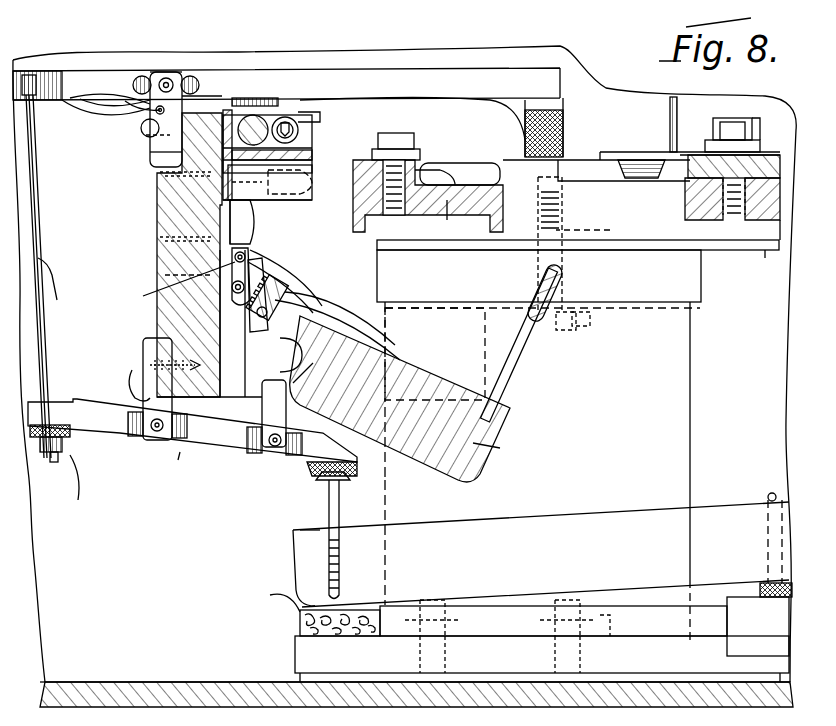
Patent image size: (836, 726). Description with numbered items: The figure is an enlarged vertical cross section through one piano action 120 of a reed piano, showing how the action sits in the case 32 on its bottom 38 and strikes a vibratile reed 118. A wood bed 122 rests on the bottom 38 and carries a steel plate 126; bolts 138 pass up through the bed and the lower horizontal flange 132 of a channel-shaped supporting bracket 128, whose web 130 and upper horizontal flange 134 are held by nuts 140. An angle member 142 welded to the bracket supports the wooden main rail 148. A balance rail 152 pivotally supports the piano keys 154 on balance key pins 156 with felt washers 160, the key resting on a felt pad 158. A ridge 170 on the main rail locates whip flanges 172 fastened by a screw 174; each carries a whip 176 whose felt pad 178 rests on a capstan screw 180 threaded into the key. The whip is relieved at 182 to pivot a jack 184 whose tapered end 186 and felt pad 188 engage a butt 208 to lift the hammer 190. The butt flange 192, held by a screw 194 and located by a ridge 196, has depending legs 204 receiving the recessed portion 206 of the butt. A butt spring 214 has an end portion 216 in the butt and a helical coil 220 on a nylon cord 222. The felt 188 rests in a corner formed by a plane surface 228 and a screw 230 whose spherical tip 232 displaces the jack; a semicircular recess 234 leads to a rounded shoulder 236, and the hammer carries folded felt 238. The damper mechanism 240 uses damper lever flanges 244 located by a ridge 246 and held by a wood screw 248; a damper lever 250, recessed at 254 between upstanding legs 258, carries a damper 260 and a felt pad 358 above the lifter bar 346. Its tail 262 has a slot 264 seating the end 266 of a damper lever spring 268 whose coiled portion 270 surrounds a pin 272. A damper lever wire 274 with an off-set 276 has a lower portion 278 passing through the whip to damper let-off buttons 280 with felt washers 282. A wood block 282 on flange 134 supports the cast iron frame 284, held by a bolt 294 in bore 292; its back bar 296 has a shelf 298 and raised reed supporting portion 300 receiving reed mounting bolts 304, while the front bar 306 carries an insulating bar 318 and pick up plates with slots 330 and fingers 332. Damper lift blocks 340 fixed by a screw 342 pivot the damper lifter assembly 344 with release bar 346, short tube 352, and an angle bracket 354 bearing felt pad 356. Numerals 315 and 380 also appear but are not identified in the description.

The case 32 is at (97, 670).
The bottom 38 is at (157, 697).
The vibratile reed 118 is at (581, 143).
The piano action 120 is at (172, 458).
The bed 122 is at (300, 640).
The steel plate 126 is at (606, 682).
The supporting bracket 128 is at (667, 392).
The web 130 is at (675, 418).
The lower horizontal flange 132 is at (656, 630).
The upper horizontal flange 134 is at (690, 312).
The bolt 138 is at (445, 662).
The nut 140 is at (445, 620).
The angle member 142 is at (232, 400).
The main rail 148 is at (157, 249).
The balance rail 152 is at (735, 650).
The piano key 154 is at (572, 520).
The balance key pin 156 is at (770, 495).
The felt pad 158 is at (300, 612).
The felt washer 160 is at (760, 586).
The ridge 170 is at (160, 352).
The whip flange 172 is at (142, 367).
The screw 174 is at (150, 348).
The whip 176 is at (115, 422).
The felt pad 178 is at (350, 477).
The capstan screw 180 is at (327, 490).
The relieved portion 182 is at (250, 454).
The jack 184 is at (372, 386).
The tapered end 186 is at (313, 363).
The felt pad 188 is at (311, 349).
The hammer 190 is at (522, 369).
The butt flange 192 is at (265, 222).
The screw 194 is at (160, 236).
The ridge 196 is at (165, 220).
The depending leg 204 is at (252, 332).
The recessed portion 206 is at (262, 285).
The butt 208 is at (500, 448).
The butt spring 214 is at (302, 278).
The extending end portion 216 is at (402, 346).
The helical coil 220 is at (163, 275).
The nylon cord 222 is at (170, 284).
The plane surface 228 is at (378, 284).
The screw 230 is at (292, 276).
The spherical tip 232 is at (233, 323).
The semicircular recess 234 is at (372, 300).
The rounded shoulder 236 is at (300, 386).
The hammer felt 238 is at (590, 278).
The damper mechanism 240 is at (250, 57).
The damper lever flange 244 is at (176, 110).
The ridge 246 is at (150, 153).
The wood screw 248 is at (148, 136).
The damper lever 250 is at (362, 80).
The recess 254 is at (142, 72).
The upstanding leg 258 is at (172, 72).
The damper 260 is at (563, 120).
The tail 262 is at (62, 72).
The slot 264 is at (108, 95).
The spring end 266 is at (88, 95).
The damper lever spring 268 is at (138, 111).
The helically coiled portion 270 is at (141, 128).
The pin 272 is at (182, 96).
The damper lever wire 274 is at (42, 202).
The off-set 276 is at (64, 279).
The lower portion 278 is at (52, 387).
The damper let-off button 280 is at (94, 477).
The wood block 282 is at (28, 452).
The reed and pick up supporting frame 284 is at (769, 262).
The threaded bore 292 is at (578, 205).
The bolt 294 is at (585, 330).
The back bar 296 is at (428, 202).
The shelf 298 is at (472, 184).
The raised reed supporting portion 300 is at (422, 165).
The reed mounting bolt 304 is at (400, 135).
The front bar 306 is at (694, 199).
The plate 315 is at (630, 172).
The insulating bar 318 is at (765, 170).
The slot 330 is at (622, 158).
The finger 332 is at (606, 150).
The wood block 340 is at (290, 200).
The screw 342 is at (318, 158).
The damper lifter assembly 344 is at (312, 130).
The damper lifter bar 346 is at (260, 108).
The short tube 352 is at (298, 118).
The angle bracket 354 is at (286, 210).
The felt pad 356 is at (318, 146).
The felt pad 358 is at (250, 114).
The nut 380 is at (690, 150).